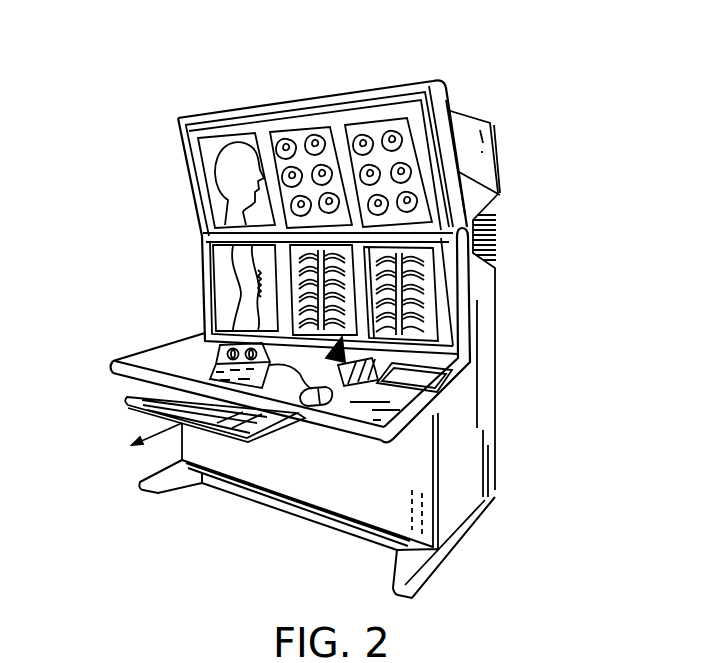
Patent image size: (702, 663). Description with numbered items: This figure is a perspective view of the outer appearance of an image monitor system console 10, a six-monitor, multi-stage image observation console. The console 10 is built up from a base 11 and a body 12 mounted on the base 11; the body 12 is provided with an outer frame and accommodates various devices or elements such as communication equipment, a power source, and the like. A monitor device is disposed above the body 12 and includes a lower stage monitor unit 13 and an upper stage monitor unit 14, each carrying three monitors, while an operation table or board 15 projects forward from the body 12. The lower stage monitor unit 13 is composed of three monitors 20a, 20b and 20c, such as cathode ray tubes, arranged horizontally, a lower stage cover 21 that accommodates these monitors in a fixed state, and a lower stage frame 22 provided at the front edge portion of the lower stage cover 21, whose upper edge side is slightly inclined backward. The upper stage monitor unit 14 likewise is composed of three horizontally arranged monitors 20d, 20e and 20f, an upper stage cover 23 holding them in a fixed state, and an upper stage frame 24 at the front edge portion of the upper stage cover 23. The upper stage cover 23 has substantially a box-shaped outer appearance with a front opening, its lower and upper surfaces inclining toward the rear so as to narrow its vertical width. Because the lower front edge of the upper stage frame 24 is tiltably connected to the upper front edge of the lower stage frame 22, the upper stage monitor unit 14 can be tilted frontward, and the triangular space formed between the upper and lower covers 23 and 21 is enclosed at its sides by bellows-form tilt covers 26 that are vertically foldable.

The image monitor system console 10 is at (171, 99).
The base 11 is at (472, 528).
The body 12 is at (470, 436).
The lower stage monitor unit 13 is at (178, 282).
The upper stage monitor unit 14 is at (170, 159).
The operation table 15 is at (142, 367).
The monitor 20a is at (218, 266).
The monitor 20b is at (300, 314).
The monitor 20c is at (427, 298).
The monitor 20d is at (213, 200).
The monitor 20e is at (297, 140).
The monitor 20f is at (377, 127).
The lower stage cover 21 is at (483, 337).
The lower stage frame 22 is at (463, 310).
The upper stage cover 23 is at (468, 130).
The upper stage frame 24 is at (457, 173).
The tilt cover 26 is at (493, 225).